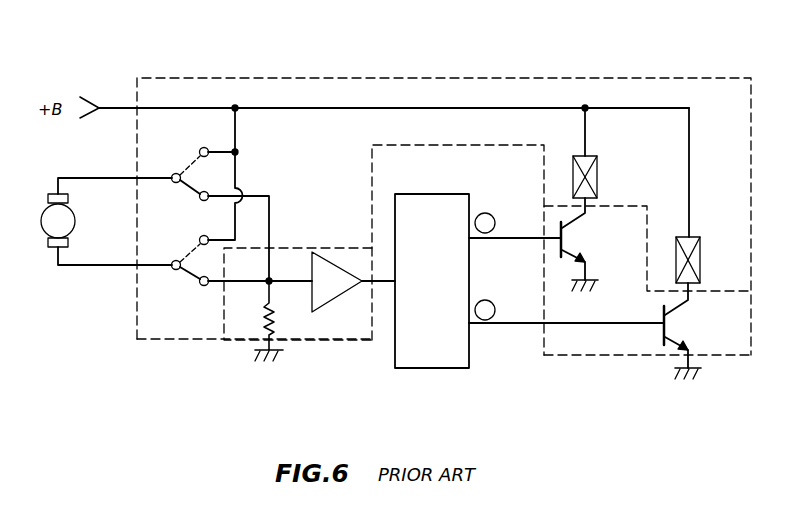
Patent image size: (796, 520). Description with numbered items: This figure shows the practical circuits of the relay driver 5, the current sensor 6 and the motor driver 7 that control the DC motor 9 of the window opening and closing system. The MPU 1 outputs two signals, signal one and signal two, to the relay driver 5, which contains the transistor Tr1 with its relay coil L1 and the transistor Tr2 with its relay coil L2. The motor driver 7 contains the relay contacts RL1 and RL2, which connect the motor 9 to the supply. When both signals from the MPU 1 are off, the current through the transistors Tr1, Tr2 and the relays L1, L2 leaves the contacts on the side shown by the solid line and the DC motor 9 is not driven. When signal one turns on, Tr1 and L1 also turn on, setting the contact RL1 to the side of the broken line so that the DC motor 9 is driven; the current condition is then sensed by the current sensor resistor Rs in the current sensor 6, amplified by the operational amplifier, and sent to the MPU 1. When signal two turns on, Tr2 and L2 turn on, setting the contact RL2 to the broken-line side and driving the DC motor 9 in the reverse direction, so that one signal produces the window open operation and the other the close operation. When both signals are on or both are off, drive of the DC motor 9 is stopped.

The microprocessor (MPU) 1 is at (432, 191).
The relay driver 5 is at (599, 356).
The current sensor 6 is at (337, 341).
The motor driver 7 is at (493, 78).
The motor 9 is at (76, 210).
The relay contact RL1 is at (209, 205).
The relay contact RL2 is at (229, 256).
The current sensor resistor Rs is at (255, 321).
The relay coil L1 is at (598, 152).
The relay coil L2 is at (700, 271).
The transistor Tr1 is at (593, 244).
The transistor Tr2 is at (696, 331).